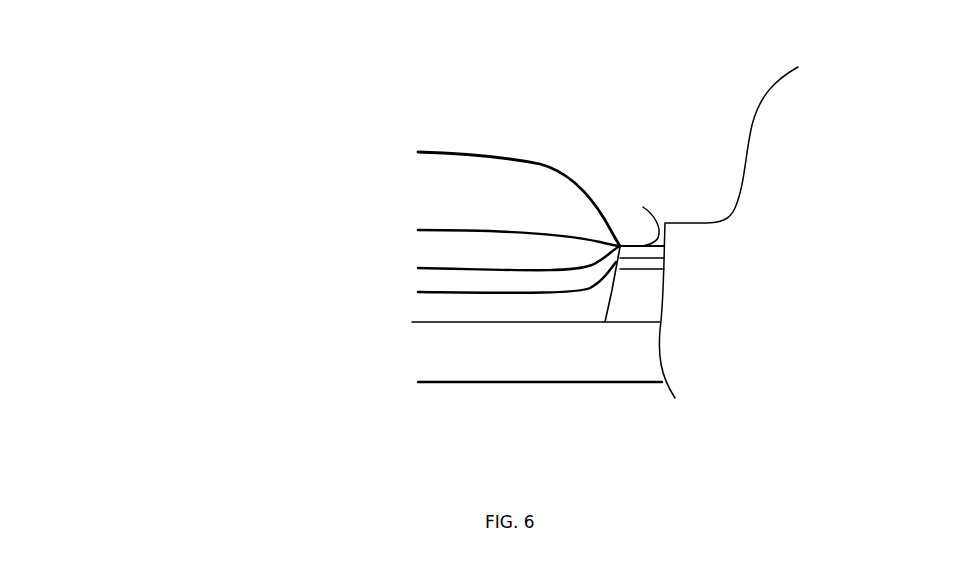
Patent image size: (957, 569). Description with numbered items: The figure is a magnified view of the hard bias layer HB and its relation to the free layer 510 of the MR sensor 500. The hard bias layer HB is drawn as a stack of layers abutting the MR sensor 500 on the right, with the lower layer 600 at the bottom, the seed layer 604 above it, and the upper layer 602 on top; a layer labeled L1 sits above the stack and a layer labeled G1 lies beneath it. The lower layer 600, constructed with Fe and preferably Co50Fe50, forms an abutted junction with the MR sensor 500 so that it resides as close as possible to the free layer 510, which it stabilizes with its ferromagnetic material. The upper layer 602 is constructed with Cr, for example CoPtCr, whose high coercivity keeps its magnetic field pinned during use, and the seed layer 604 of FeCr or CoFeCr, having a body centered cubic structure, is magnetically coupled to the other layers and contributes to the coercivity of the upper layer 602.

The MR sensor 500 is at (762, 216).
The free layer 510 is at (662, 265).
The lower layer 600 is at (420, 307).
The upper layer 602 is at (425, 245).
The seed layer 604 is at (427, 282).
The hard bias layer HB is at (360, 262).
The first lead layer L1 is at (427, 190).
The first gap layer G1 is at (427, 352).